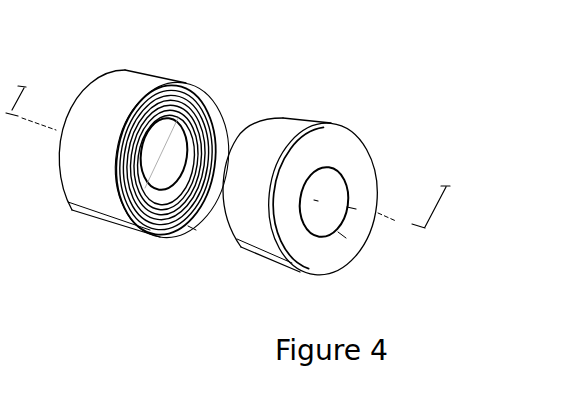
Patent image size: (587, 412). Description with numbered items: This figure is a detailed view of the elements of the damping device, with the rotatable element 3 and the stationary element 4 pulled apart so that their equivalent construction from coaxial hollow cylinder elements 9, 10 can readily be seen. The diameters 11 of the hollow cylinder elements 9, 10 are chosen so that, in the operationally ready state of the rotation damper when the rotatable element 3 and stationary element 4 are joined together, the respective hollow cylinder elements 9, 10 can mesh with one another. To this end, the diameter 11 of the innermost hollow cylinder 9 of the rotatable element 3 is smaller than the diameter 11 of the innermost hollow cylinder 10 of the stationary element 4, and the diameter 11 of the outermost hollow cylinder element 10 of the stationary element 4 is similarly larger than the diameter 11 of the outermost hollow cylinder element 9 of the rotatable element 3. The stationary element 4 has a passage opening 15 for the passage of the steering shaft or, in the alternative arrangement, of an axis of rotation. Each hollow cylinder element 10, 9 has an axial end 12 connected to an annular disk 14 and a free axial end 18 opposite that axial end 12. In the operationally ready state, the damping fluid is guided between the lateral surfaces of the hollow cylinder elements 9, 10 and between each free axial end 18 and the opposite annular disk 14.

The rotatable element 3 is at (303, 123).
The stationary element 4 is at (160, 86).
The hollow cylinder element 9 is at (348, 188).
The hollow cylinder element 10 is at (154, 232).
The diameter 11 is at (128, 99).
The axial end 12 is at (374, 164).
The annular disk 14 is at (318, 253).
The passage opening 15 is at (220, 108).
The free axial end 18 is at (188, 227).